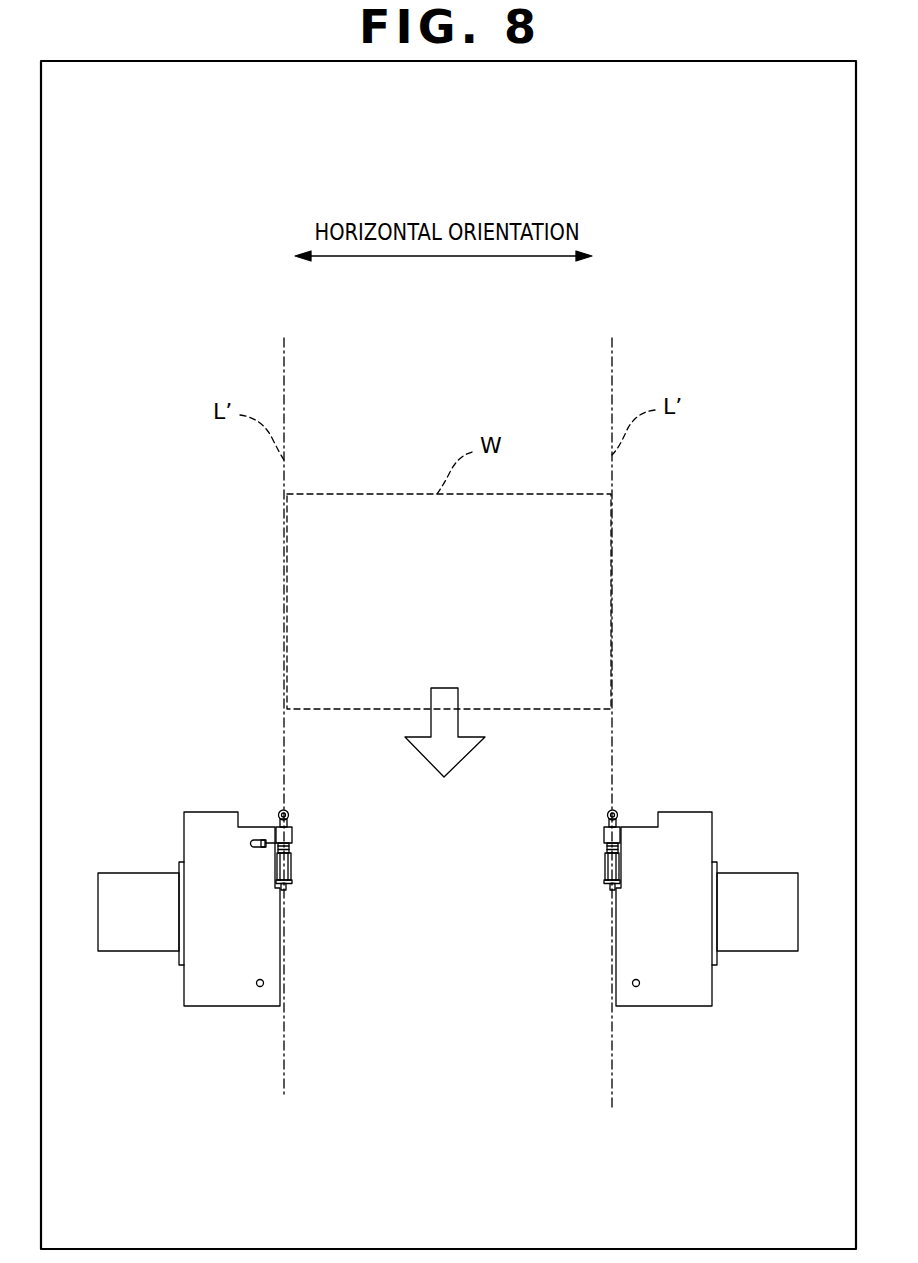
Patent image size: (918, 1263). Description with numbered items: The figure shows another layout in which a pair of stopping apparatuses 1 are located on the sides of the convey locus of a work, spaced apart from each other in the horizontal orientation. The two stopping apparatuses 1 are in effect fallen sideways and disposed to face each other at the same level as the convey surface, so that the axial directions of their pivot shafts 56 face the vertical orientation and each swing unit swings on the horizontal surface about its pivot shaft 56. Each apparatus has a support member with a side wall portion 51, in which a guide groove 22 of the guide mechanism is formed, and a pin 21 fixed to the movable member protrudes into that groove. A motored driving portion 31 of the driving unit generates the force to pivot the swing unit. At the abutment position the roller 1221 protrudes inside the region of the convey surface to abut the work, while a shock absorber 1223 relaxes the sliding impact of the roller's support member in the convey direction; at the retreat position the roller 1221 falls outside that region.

The stopping apparatus 1 is at (157, 787).
The pin 21 is at (262, 841).
The guide groove 22 is at (248, 845).
The driving portion 31 is at (137, 953).
The side wall portion 51 is at (195, 1000).
The pivot shaft 56 is at (260, 987).
The roller 1221 is at (282, 811).
The shock absorber 1223 is at (285, 867).